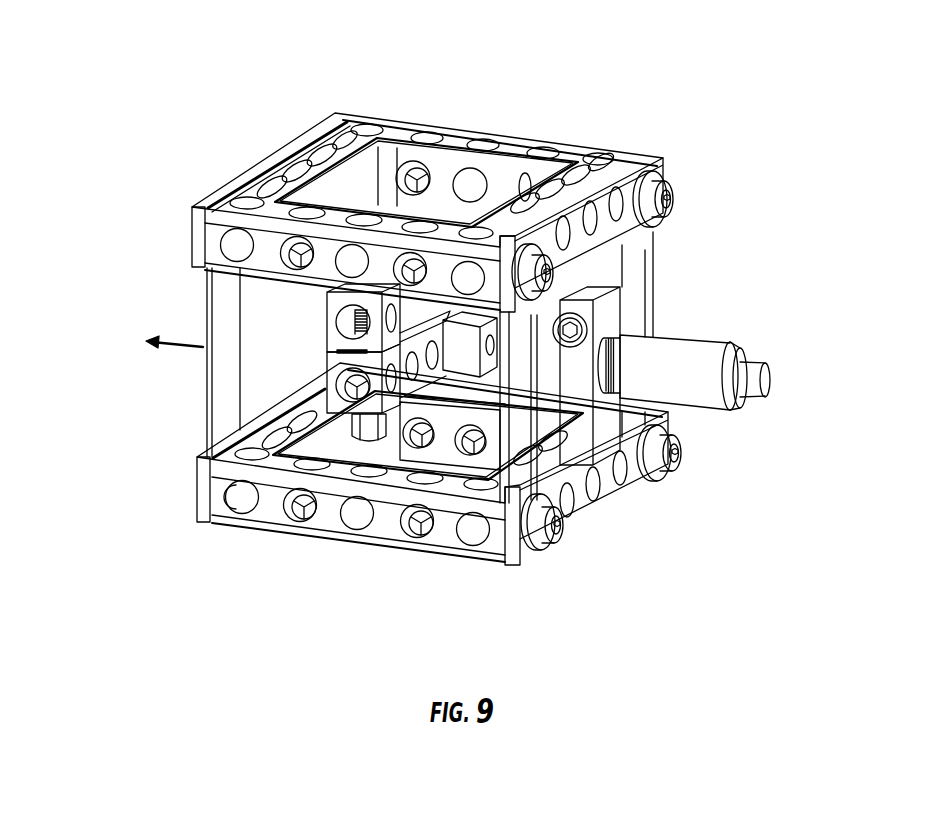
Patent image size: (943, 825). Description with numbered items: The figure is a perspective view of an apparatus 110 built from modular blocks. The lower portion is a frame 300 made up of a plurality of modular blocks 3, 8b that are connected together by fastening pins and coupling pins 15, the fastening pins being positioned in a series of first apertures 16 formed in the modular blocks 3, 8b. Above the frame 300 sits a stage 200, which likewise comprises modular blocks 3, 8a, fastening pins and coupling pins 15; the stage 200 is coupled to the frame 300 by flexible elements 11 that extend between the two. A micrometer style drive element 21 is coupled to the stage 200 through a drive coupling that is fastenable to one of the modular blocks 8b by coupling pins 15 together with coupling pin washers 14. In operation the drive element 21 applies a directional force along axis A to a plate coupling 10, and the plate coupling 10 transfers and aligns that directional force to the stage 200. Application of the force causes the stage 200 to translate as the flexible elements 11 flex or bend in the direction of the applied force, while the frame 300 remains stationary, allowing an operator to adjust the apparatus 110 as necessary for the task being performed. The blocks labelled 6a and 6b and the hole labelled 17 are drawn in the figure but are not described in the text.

The apparatus 110 is at (667, 74).
The stage 200 is at (105, 224).
The frame 300 is at (105, 458).
The modular block 3 is at (335, 115).
The modular block 8a is at (500, 137).
The modular block 8b is at (377, 550).
The flexible element 11 is at (203, 382).
The coupling pin washer 14 is at (650, 228).
The coupling pin 15 is at (675, 197).
The drive element 21 is at (753, 388).
The plate coupling 10 is at (457, 368).
The lower cube element 6a is at (327, 378).
The upper cube element 6b is at (327, 318).
The first aperture 16 is at (263, 459).
The front-face hole 17 is at (243, 512).